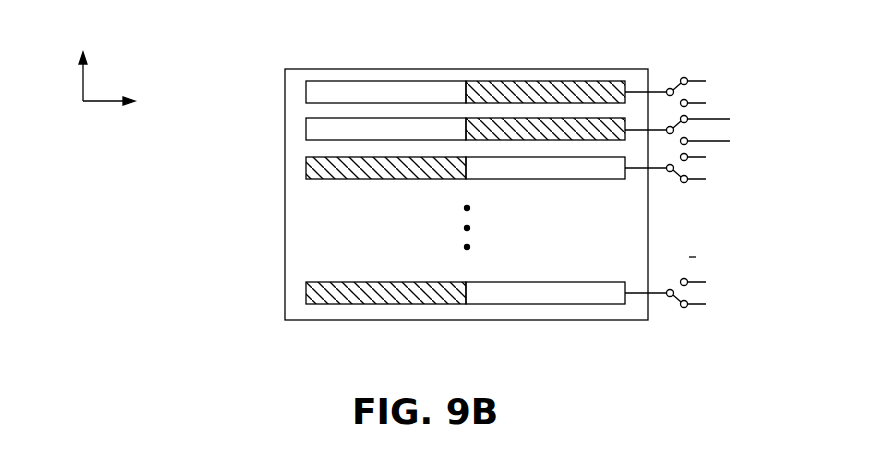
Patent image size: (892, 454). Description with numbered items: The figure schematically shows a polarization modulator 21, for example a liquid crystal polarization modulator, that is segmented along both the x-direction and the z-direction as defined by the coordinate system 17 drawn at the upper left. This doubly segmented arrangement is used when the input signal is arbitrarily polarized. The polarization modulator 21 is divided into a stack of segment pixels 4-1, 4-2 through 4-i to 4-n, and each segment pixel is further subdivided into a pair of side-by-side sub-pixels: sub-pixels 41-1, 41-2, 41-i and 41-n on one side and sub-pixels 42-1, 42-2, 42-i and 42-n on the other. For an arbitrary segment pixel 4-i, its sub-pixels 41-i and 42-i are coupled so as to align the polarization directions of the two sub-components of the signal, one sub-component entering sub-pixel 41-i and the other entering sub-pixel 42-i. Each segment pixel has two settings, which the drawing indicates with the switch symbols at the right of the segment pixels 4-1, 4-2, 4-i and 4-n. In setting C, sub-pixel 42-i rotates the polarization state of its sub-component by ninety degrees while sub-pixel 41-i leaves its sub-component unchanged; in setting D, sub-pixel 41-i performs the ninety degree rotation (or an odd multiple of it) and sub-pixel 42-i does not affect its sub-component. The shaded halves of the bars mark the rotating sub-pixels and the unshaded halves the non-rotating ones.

The coordinate system 17 is at (66, 31).
The polarization modulator 21 is at (462, 69).
The sub-pixel 41-1 is at (306, 92).
The sub-pixel 41-2 is at (306, 130).
The sub-pixel 41-i is at (306, 166).
The sub-pixel 41-n is at (306, 292).
The sub-pixel 42-1 is at (522, 90).
The sub-pixel 42-2 is at (572, 130).
The sub-pixel 42-i is at (590, 170).
The sub-pixel 42-n is at (590, 297).
The segment pixel 4-1 is at (730, 67).
The segment pixel 4-2 is at (762, 110).
The segment pixel 4-i is at (730, 148).
The segment pixel 4-n is at (730, 270).